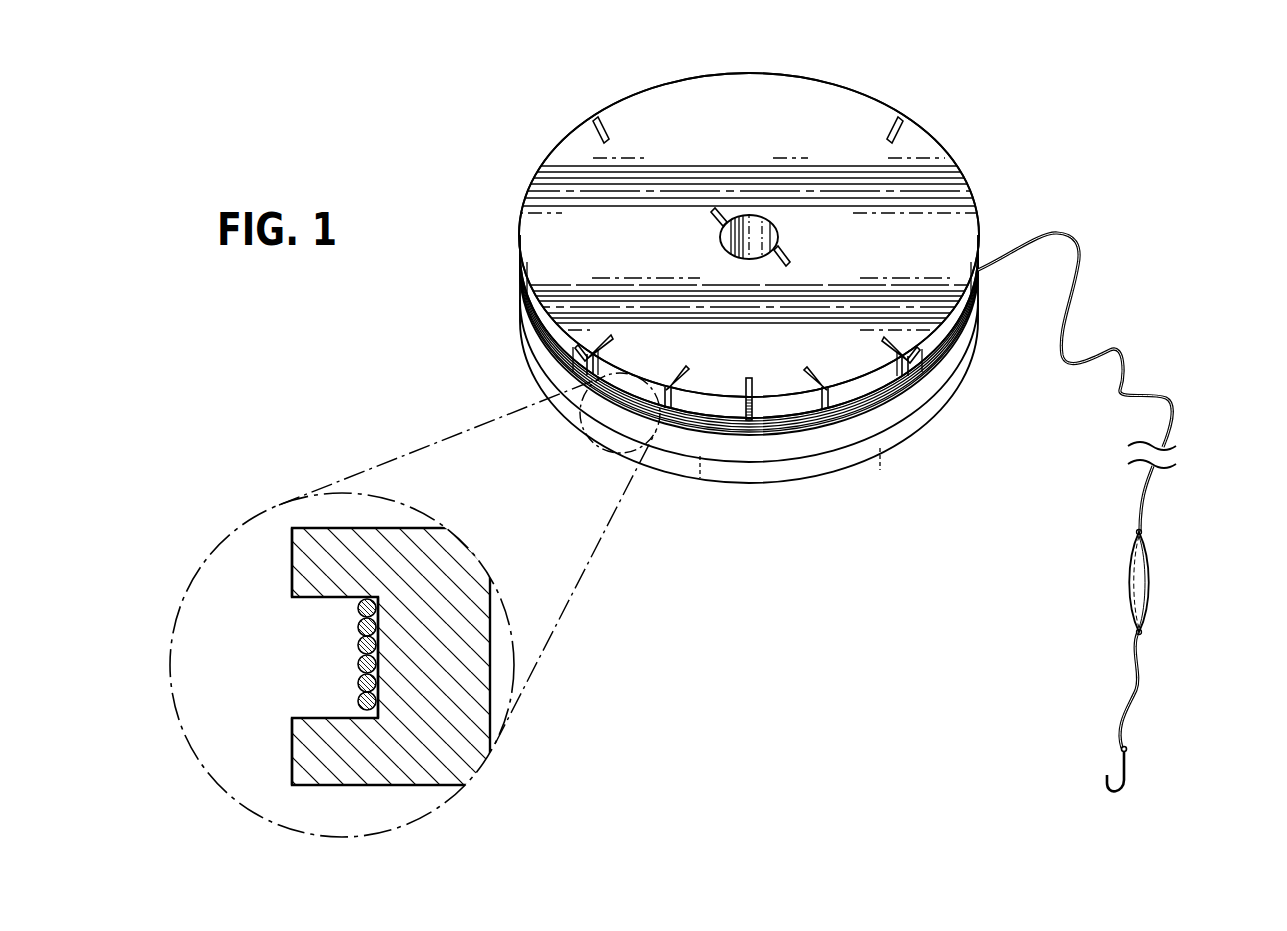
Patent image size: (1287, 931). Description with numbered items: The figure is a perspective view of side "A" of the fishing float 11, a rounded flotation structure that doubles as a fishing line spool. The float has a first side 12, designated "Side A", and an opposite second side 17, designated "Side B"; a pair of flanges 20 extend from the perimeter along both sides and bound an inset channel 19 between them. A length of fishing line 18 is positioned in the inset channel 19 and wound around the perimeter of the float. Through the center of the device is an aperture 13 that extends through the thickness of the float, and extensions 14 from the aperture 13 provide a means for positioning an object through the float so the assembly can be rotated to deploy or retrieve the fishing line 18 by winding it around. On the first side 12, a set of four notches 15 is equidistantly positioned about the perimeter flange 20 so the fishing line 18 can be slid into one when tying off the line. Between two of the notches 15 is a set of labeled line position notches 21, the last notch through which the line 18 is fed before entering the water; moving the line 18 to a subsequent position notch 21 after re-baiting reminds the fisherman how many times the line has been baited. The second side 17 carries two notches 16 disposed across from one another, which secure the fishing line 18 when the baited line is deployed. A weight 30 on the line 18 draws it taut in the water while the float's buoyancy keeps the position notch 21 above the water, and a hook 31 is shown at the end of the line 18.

The fishing float 11 is at (454, 145).
The first side 12 is at (962, 210).
The aperture 13 is at (777, 230).
The extensions 14 is at (713, 216).
The notches 15 is at (600, 124).
The notches 16 is at (912, 427).
The second side 17 is at (812, 470).
The fishing line 18 is at (1078, 298).
The inset channel 19 is at (378, 673).
The flanges 20 is at (292, 562).
The line position notches 21 is at (670, 386).
The weight 30 is at (1150, 586).
The hook 31 is at (1127, 763).